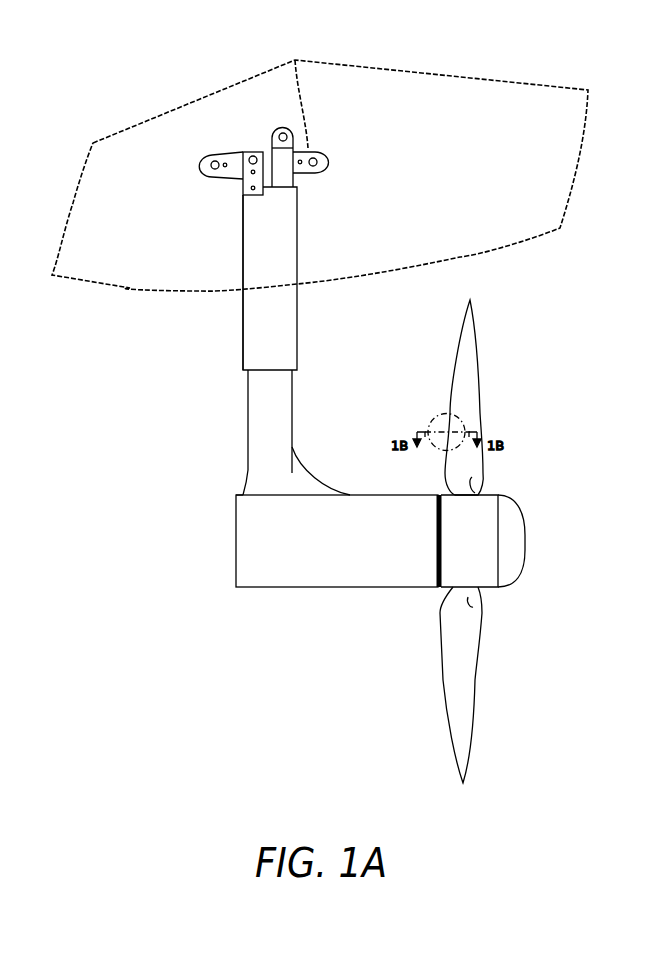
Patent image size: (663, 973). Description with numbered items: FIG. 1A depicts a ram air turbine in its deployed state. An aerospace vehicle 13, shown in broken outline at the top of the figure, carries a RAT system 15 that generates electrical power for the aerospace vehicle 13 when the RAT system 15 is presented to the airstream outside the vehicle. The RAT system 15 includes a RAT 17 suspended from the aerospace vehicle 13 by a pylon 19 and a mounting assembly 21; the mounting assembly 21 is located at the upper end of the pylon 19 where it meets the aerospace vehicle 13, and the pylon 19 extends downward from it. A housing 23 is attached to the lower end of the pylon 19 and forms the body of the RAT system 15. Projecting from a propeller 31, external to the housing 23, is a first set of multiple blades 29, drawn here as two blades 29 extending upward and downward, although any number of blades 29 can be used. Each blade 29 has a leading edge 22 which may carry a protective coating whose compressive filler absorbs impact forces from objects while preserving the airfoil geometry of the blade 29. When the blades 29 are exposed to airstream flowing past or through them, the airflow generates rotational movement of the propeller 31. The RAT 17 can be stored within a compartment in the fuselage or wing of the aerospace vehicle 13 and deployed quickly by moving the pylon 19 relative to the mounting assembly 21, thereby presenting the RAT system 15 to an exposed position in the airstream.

The aerospace vehicle 13 is at (107, 165).
The mounting assembly 21 is at (296, 58).
The pylon 19 is at (250, 414).
The housing 23 is at (240, 493).
The RAT system 15 is at (386, 607).
The RAT 17 is at (488, 593).
The propeller 31 is at (489, 586).
The leading edge 22 is at (460, 355).
The blades 29 is at (455, 687).